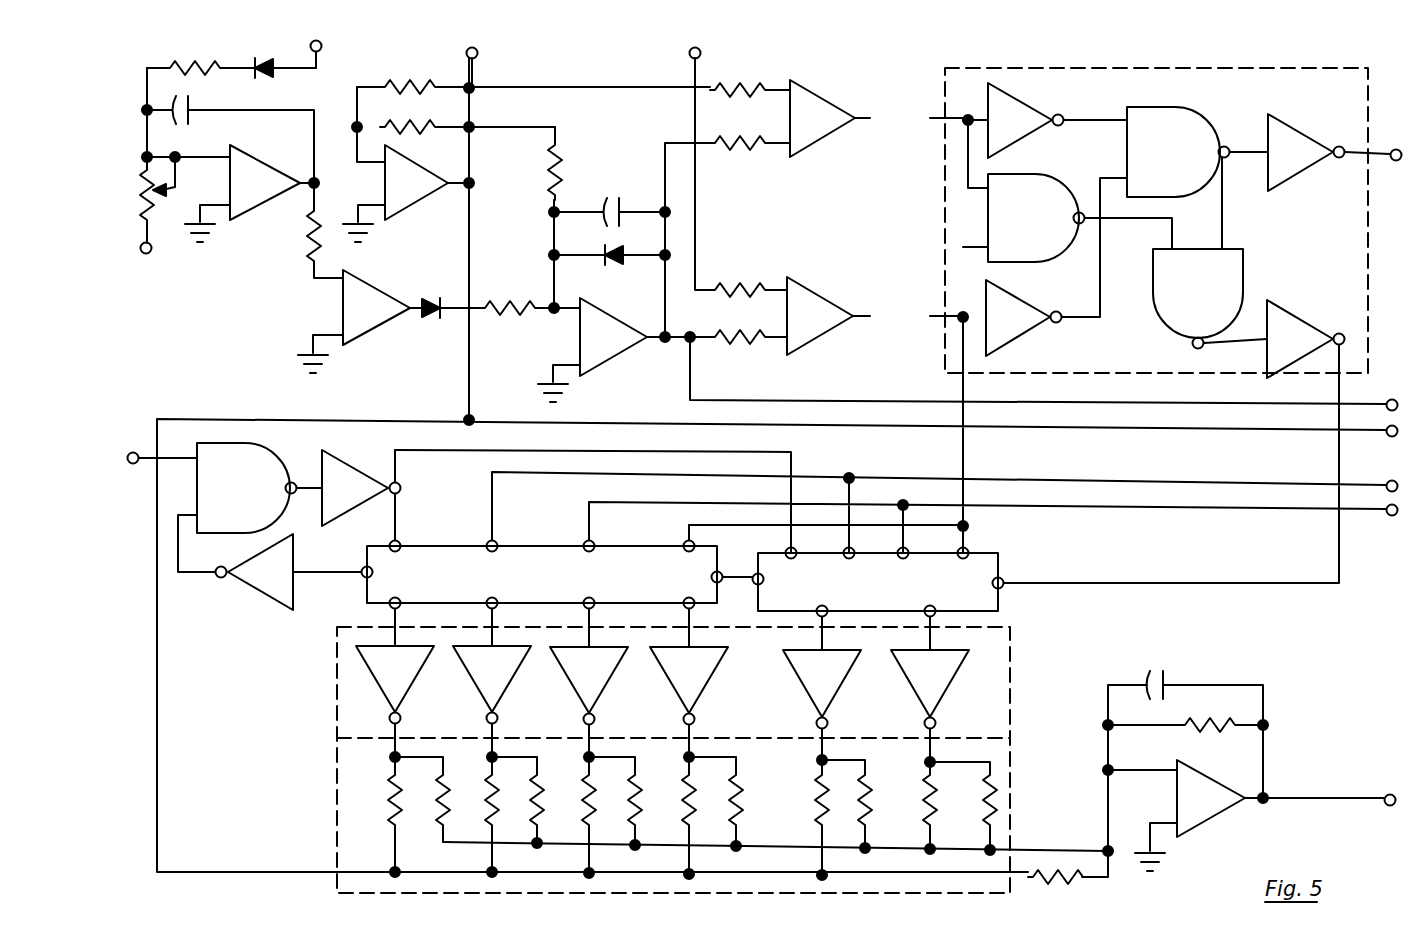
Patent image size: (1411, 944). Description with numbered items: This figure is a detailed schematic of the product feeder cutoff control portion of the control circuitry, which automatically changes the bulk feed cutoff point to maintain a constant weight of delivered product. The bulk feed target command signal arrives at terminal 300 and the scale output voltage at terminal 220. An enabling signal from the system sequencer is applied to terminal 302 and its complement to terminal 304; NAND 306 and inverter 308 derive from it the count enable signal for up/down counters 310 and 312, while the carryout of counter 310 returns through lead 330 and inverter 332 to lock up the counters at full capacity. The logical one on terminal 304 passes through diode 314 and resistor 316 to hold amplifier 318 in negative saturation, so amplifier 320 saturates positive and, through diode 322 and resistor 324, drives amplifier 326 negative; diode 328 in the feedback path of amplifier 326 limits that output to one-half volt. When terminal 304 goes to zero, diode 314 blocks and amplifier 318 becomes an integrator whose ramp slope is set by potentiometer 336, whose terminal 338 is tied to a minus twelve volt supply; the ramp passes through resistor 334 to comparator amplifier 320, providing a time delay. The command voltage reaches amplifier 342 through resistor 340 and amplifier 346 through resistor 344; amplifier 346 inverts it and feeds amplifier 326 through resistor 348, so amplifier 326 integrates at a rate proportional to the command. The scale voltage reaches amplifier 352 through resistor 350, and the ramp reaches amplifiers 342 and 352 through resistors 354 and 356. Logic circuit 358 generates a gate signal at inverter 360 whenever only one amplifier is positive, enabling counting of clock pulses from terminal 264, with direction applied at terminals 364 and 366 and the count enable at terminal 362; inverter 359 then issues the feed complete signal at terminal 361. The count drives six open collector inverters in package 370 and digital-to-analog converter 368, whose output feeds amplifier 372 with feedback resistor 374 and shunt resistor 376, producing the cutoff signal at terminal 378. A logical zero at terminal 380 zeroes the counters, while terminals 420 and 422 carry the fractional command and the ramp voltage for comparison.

The terminal 220 is at (690, 68).
The terminal 264 is at (1386, 482).
The terminal 300 is at (476, 58).
The terminal 302 is at (140, 436).
The terminal 304 is at (322, 50).
The NAND 306 is at (286, 460).
The inverter 308 is at (361, 466).
The up/down counter 310 is at (366, 600).
The up/down counter 312 is at (994, 598).
The diode 314 is at (272, 62).
The resistor 316 is at (196, 62).
The amplifier 318 is at (274, 156).
The amplifier 320 is at (364, 346).
The diode 322 is at (422, 314).
The resistor 324 is at (504, 314).
The amplifier 326 is at (604, 358).
The diode 328 is at (618, 260).
The lead 330 is at (336, 570).
The inverter 332 is at (248, 586).
The resistor 334 is at (310, 210).
The potentiometer 336 is at (148, 192).
The terminal 338 is at (151, 252).
The resistor 340 is at (766, 78).
The amplifier 342 is at (832, 94).
The resistor 344 is at (406, 84).
The amplifier 346 is at (428, 214).
The resistor 348 is at (557, 170).
The resistor 350 is at (738, 284).
The amplifier 352 is at (828, 290).
The resistor 354 is at (760, 150).
The resistor 356 is at (740, 344).
The logic circuit 358 is at (1168, 101).
The inverter 359 is at (1315, 128).
The inverter 360 is at (1306, 312).
The terminal 361 is at (1388, 152).
The terminal 362 is at (1006, 582).
The terminal 364 is at (666, 542).
The terminal 366 is at (974, 553).
The digital-to-analog converter 368 is at (336, 758).
The inverter package 370 is at (1010, 642).
The amplifier 372 is at (1210, 818).
The feedback resistor 374 is at (1226, 710).
The resistor 376 is at (1082, 885).
The terminal 378 is at (1384, 792).
The terminal 380 is at (1388, 514).
The terminal 420 is at (1386, 436).
The terminal 422 is at (1388, 402).